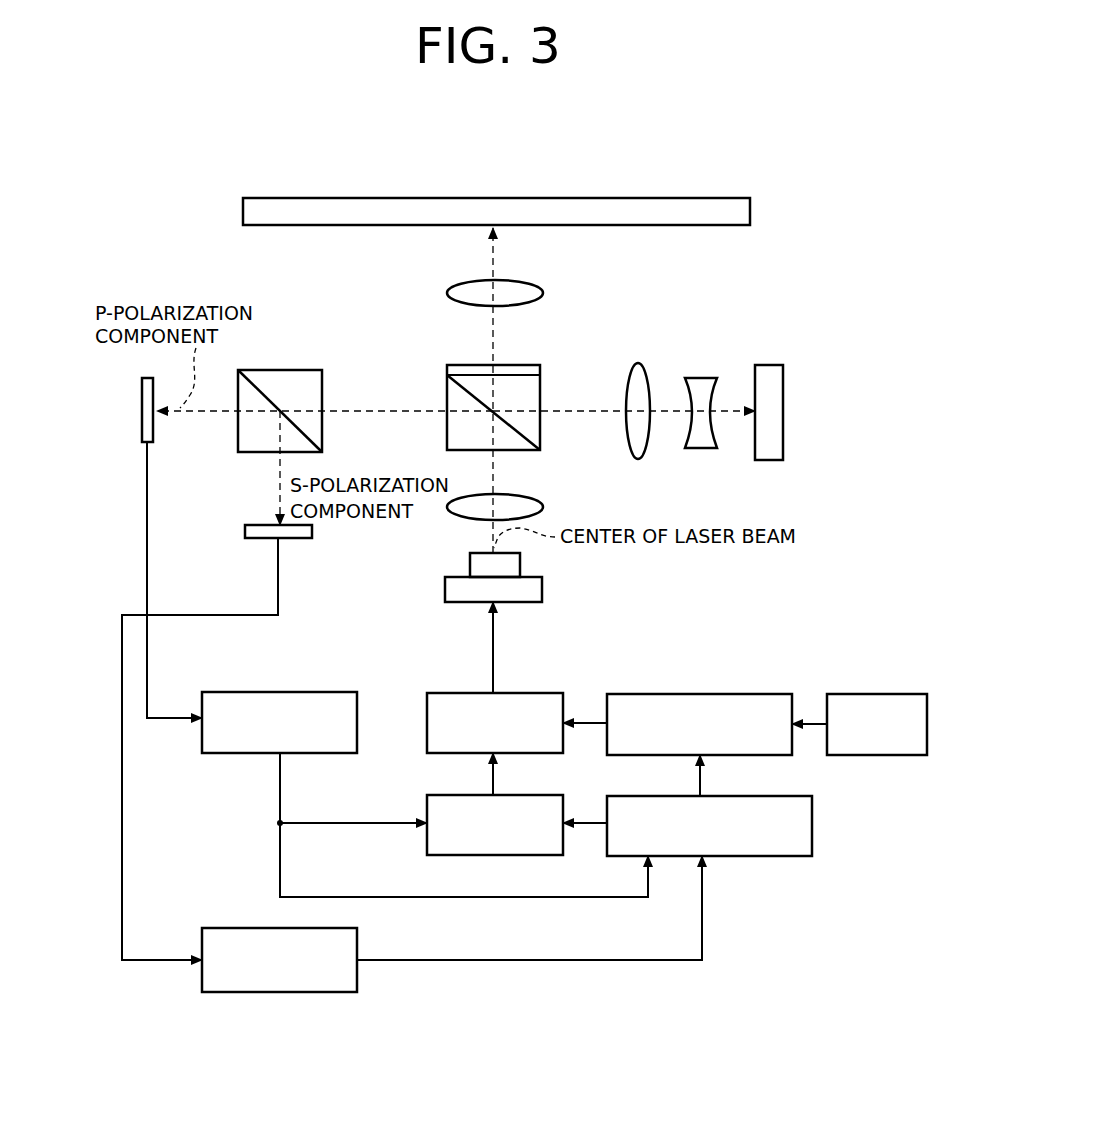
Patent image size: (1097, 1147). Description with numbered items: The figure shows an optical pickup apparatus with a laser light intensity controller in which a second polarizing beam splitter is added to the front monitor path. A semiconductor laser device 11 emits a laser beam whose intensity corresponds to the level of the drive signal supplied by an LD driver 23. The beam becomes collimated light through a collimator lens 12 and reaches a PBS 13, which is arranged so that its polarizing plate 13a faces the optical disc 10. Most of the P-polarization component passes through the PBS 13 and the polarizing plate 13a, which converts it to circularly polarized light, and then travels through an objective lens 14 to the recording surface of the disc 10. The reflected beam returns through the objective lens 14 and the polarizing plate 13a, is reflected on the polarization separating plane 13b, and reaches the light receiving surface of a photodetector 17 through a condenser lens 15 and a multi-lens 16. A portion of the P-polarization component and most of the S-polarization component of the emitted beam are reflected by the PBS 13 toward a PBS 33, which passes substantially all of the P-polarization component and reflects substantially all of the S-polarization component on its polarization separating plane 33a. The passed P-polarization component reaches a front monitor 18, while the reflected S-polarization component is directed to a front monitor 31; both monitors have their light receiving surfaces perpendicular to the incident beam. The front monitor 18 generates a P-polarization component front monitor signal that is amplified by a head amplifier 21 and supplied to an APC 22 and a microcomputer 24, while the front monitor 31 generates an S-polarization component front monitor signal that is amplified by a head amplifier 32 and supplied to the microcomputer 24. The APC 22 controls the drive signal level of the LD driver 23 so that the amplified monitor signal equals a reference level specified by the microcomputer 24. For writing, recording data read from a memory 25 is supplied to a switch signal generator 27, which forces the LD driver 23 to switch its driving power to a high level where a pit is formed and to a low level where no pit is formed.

The optical disc 10 is at (693, 198).
The semiconductor laser device 11 is at (542, 590).
The collimator lens 12 is at (540, 505).
The PBS 13 is at (447, 437).
The polarizing plate 13a is at (448, 366).
The polarization separating plane 13b is at (520, 435).
The objective lens 14 is at (540, 290).
The condenser lens 15 is at (637, 363).
The multi-lens 16 is at (707, 378).
The photodetector 17 is at (773, 365).
The front monitor 18 is at (153, 432).
The head amplifier 21 is at (283, 692).
The APC 22 is at (427, 797).
The LD driver 23 is at (466, 693).
The microcomputer 24 is at (812, 812).
The memory 25 is at (865, 694).
The switch signal generator 27 is at (700, 694).
The front monitor for S-polarization 31 is at (300, 538).
The head amplifier 32 is at (238, 928).
The PBS 33 is at (296, 370).
The polarization separating plane 33a is at (292, 425).